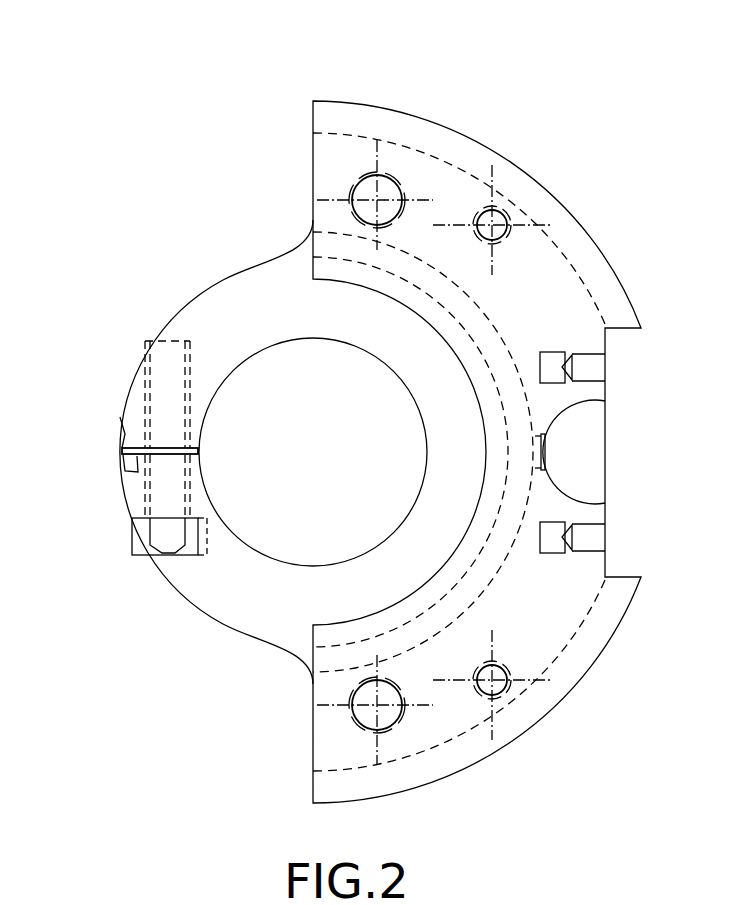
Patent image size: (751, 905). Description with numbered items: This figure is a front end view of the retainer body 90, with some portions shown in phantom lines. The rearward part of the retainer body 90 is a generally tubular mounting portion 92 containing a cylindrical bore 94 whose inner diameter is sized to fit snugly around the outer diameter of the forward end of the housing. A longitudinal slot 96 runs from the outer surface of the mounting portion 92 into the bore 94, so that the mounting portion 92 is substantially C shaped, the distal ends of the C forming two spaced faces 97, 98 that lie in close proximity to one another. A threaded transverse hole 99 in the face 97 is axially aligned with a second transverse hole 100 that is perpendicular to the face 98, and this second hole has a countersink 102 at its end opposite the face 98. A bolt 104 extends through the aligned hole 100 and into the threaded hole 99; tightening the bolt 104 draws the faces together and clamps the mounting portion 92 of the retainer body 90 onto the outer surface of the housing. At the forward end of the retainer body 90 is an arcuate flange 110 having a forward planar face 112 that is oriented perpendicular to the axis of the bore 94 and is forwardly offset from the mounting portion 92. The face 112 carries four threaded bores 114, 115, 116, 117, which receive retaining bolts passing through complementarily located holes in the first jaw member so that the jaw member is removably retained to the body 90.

The retainer body 90 is at (372, 433).
The mounting portion 92 is at (223, 280).
The cylindrical bore 94 is at (260, 513).
The longitudinal slot 96 is at (123, 465).
The face 97 is at (120, 417).
The face 98 is at (127, 478).
The threaded transverse hole 99 is at (150, 382).
The second transverse hole 100 is at (147, 505).
The countersink 102 is at (190, 522).
The bolt 104 is at (135, 550).
The arcuate flange 110 is at (562, 700).
The forward planar face 112 is at (562, 617).
The threaded bore 114 is at (397, 178).
The threaded bore 115 is at (503, 205).
The threaded bore 116 is at (393, 728).
The threaded bore 117 is at (541, 736).